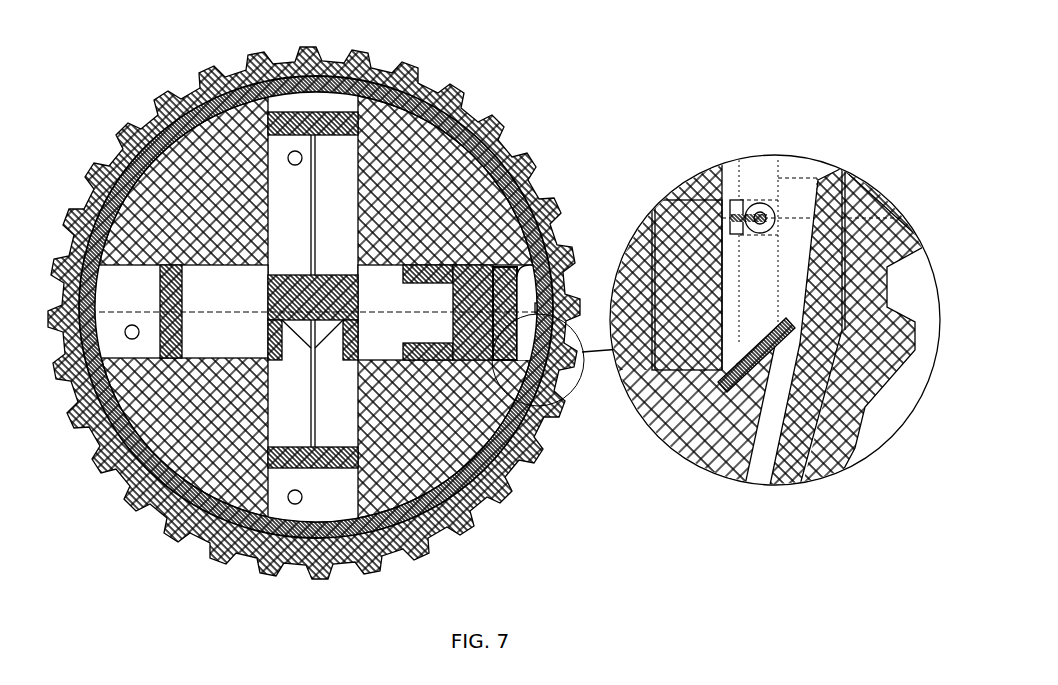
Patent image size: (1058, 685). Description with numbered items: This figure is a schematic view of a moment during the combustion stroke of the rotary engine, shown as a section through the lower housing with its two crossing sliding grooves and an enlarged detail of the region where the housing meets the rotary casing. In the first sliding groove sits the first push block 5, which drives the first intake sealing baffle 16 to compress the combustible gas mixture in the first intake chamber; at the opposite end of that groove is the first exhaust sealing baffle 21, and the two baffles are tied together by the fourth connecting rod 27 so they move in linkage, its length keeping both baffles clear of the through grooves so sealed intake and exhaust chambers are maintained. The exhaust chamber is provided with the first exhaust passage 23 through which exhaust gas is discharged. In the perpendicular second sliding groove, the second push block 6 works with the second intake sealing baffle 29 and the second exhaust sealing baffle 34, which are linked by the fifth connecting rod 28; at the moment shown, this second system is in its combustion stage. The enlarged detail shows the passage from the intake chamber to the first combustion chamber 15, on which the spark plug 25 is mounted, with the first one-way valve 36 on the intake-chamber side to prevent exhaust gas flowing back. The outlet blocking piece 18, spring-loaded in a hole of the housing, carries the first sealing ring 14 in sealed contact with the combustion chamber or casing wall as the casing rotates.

The first push block 5 is at (477, 280).
The second push block 6 is at (311, 274).
The first sealing ring 14 is at (814, 302).
The first combustion chamber 15 is at (800, 246).
The first intake sealing baffle 16 is at (508, 284).
The outlet blocking piece 18 is at (690, 190).
The first exhaust sealing baffle 21 is at (175, 292).
The first exhaust passage 23 is at (137, 341).
The spark plug 25 is at (760, 201).
The fourth connecting rod 27 is at (242, 306).
The fifth connecting rod 28 is at (446, 531).
The second intake sealing baffle 29 is at (347, 117).
The second exhaust sealing baffle 34 is at (293, 456).
The first one-way valve 36 is at (735, 196).